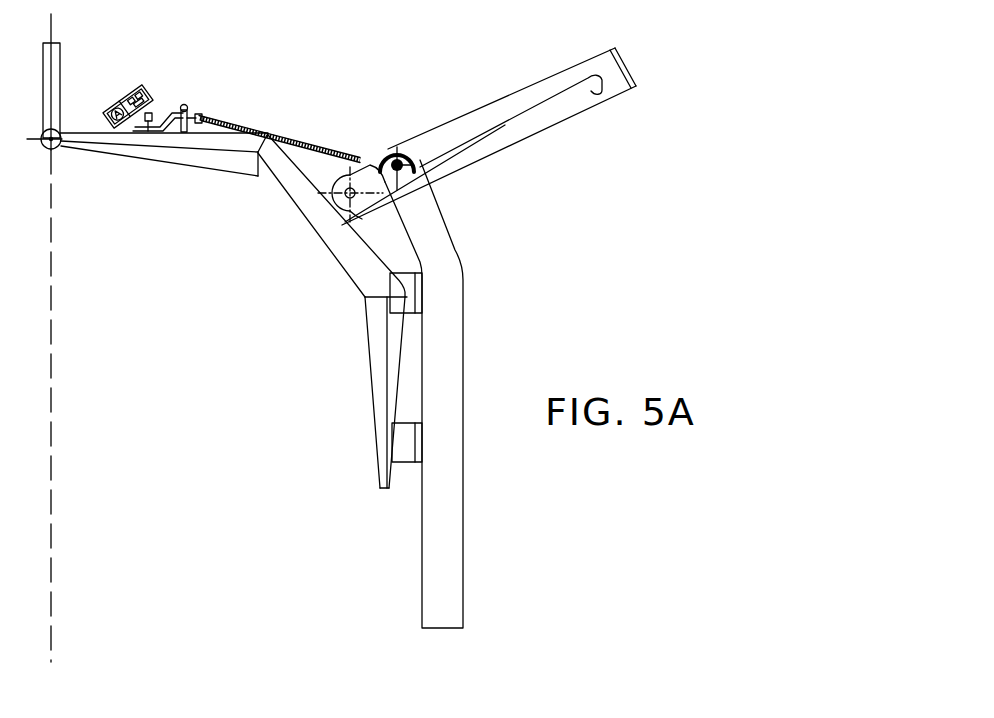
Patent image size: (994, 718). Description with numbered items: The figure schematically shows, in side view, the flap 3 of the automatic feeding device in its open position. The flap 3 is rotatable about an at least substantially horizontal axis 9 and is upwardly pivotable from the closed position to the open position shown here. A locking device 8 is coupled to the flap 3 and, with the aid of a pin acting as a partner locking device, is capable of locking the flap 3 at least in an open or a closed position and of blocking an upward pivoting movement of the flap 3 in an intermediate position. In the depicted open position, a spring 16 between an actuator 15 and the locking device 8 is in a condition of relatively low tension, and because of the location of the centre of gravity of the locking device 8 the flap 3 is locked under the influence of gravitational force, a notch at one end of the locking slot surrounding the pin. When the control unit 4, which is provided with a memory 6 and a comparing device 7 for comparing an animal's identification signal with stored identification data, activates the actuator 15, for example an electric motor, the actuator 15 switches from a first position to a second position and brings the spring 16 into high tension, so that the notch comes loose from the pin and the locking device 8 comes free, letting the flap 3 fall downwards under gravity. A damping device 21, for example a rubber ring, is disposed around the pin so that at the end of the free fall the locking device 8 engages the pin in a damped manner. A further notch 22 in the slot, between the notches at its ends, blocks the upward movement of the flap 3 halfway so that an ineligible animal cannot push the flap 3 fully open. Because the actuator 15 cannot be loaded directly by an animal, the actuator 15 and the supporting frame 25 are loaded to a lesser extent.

The flap 3 is at (294, 203).
The control unit 4 is at (103, 113).
The memory 6 is at (145, 88).
The comparing device 7 is at (155, 105).
The locking device 8 is at (565, 108).
The horizontal axis 9 is at (62, 145).
The actuator 15 is at (116, 99).
The spring 16 is at (293, 138).
The damping device 21 is at (387, 146).
The notch 22 is at (507, 126).
The supporting frame 25 is at (447, 338).